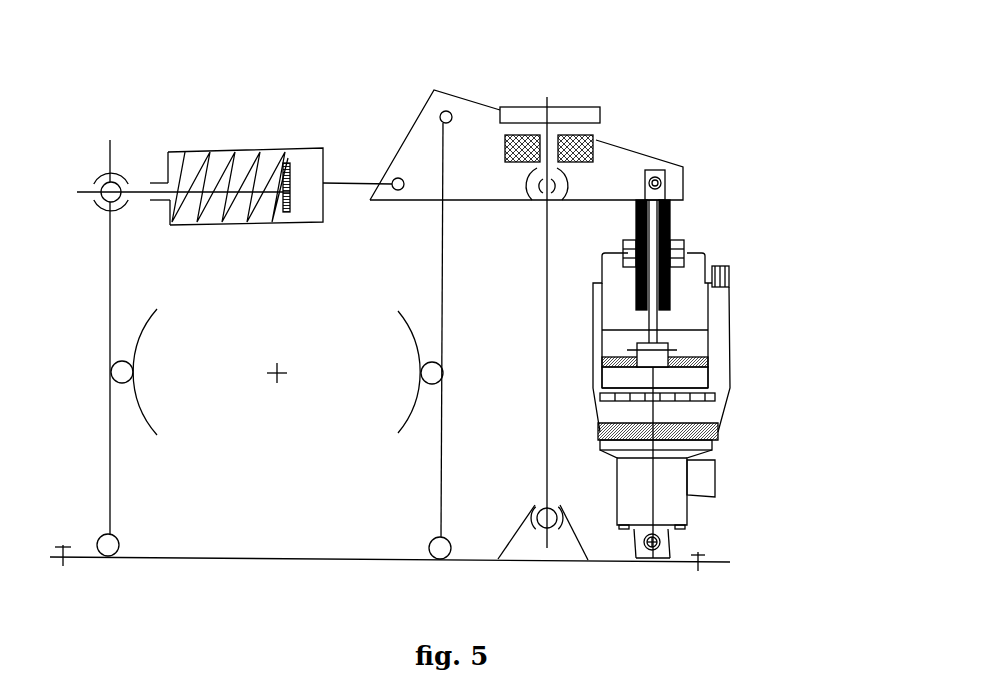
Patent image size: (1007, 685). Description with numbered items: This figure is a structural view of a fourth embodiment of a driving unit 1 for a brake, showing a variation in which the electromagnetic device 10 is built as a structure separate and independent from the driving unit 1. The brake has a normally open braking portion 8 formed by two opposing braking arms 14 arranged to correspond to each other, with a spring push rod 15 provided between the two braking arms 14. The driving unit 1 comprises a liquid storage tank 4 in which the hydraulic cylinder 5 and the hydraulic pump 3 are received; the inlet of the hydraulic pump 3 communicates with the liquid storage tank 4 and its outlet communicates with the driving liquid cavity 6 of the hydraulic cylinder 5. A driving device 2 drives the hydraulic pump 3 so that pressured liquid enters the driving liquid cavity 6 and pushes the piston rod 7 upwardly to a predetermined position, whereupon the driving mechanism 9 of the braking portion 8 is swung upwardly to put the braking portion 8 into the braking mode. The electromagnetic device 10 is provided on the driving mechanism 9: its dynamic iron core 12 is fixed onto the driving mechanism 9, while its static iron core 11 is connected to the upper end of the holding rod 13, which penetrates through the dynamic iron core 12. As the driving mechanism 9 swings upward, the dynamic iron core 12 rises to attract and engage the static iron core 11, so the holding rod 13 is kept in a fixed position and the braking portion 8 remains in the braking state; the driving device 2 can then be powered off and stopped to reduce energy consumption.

The driving unit 1 is at (722, 294).
The driving device 2 is at (663, 490).
The hydraulic pump 3 is at (692, 398).
The liquid storage tank 4 is at (732, 295).
The hydraulic cylinder 5 is at (708, 337).
The driving liquid cavity 6 is at (667, 380).
The piston rod 7 is at (657, 237).
The braking portion 8 is at (236, 129).
The driving mechanism 9 is at (427, 125).
The electromagnetic device 10 is at (526, 86).
The static iron core 11 is at (582, 115).
The dynamic iron core 12 is at (593, 137).
The holding rod 13 is at (546, 312).
The braking arms 14 is at (108, 285).
The spring push rod 15 is at (347, 183).